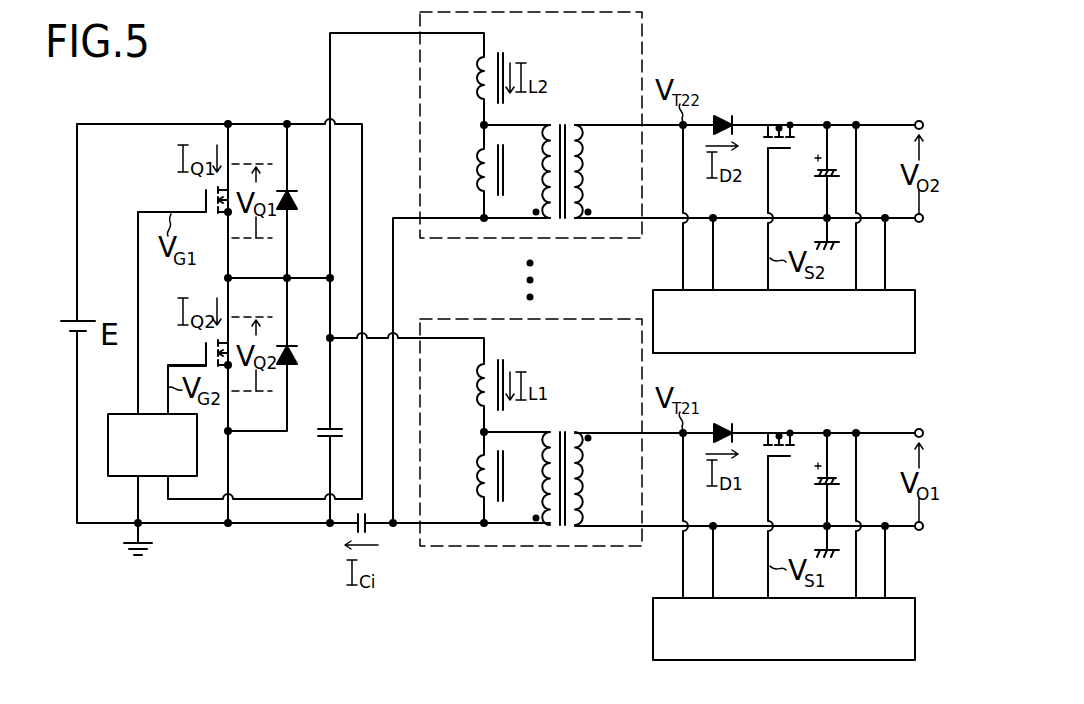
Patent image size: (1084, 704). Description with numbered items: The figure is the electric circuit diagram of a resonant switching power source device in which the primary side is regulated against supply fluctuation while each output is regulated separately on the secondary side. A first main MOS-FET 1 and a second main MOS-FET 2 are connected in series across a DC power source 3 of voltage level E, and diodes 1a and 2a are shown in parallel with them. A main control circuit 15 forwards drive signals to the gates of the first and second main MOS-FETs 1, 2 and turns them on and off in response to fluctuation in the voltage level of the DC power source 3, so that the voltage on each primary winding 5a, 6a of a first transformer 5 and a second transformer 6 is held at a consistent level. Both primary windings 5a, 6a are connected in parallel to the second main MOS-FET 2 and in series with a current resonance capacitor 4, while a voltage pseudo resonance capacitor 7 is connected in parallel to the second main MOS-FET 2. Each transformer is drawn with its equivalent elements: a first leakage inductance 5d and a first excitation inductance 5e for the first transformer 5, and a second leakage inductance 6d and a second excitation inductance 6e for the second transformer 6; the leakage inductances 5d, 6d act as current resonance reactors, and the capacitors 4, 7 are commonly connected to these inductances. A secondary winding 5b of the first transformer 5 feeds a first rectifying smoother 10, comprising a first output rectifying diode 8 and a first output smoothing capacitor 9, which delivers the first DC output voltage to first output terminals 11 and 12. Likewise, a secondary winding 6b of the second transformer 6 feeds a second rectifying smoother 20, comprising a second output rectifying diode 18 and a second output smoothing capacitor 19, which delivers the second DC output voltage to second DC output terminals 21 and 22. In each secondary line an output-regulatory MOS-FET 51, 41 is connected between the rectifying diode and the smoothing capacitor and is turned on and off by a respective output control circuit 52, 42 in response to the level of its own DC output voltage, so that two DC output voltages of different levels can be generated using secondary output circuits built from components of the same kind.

The first main MOS-FET 1 is at (204, 198).
The parasitic diode of first switching element 1a is at (296, 190).
The second main MOS-FET 2 is at (206, 350).
The parasitic diode of second switching element 2a is at (296, 343).
The DC power source 3 is at (70, 318).
The current resonance capacitor 4 is at (365, 515).
The first transformer 5 is at (535, 556).
The first primary winding 5a is at (549, 435).
The secondary winding of first transformer 5b is at (587, 478).
The first leakage inductance 5d is at (477, 386).
The first excitation inductance 5e is at (477, 476).
The second transformer 6 is at (416, 116).
The second primary winding 6a is at (549, 127).
The secondary winding of second transformer 6b is at (587, 171).
The second leakage inductance 6d is at (477, 78).
The second excitation inductance 6e is at (477, 169).
The voltage pseudo resonance capacitor 7 is at (341, 427).
The first output rectifying diode 8 is at (722, 425).
The first output smoothing capacitor 9 is at (818, 482).
The first rectifying smoother 10 is at (821, 411).
The first output terminal 11 is at (919, 429).
The first output terminal 12 is at (919, 531).
The main control circuit 15 is at (172, 458).
The second output rectifying diode 18 is at (722, 117).
The second output smoothing capacitor 19 is at (818, 174).
The second rectifying smoother 20 is at (821, 103).
The second DC output terminal 21 is at (919, 121).
The second DC output terminal 22 is at (919, 223).
The output-regulatory MOS-FET 41 is at (778, 122).
The output control circuit 42 is at (807, 335).
The output-regulatory MOS-FET 51 is at (778, 430).
The output control circuit 52 is at (807, 643).